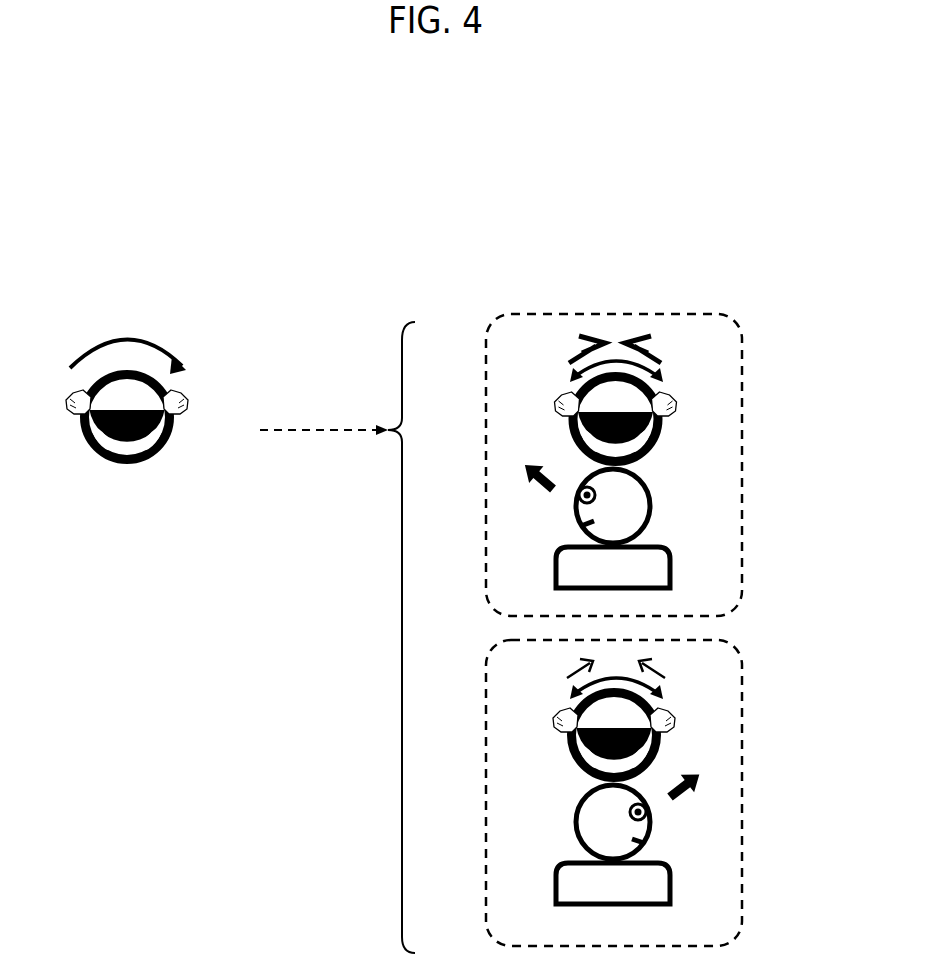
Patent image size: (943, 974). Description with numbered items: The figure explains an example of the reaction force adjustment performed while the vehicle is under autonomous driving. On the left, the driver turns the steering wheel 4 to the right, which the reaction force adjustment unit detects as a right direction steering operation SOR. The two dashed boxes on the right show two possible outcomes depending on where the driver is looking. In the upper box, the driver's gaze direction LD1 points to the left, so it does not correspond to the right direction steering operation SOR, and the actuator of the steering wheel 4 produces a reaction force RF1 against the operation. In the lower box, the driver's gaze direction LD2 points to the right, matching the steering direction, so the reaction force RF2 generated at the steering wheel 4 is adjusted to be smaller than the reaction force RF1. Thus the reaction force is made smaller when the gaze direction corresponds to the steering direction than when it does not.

The steering wheel 4 is at (172, 437).
The right direction steering operation SOR is at (160, 340).
The reaction force RF1 is at (674, 352).
The reaction force RF2 is at (675, 673).
The gaze direction LD1 is at (532, 489).
The gaze direction LD2 is at (699, 802).